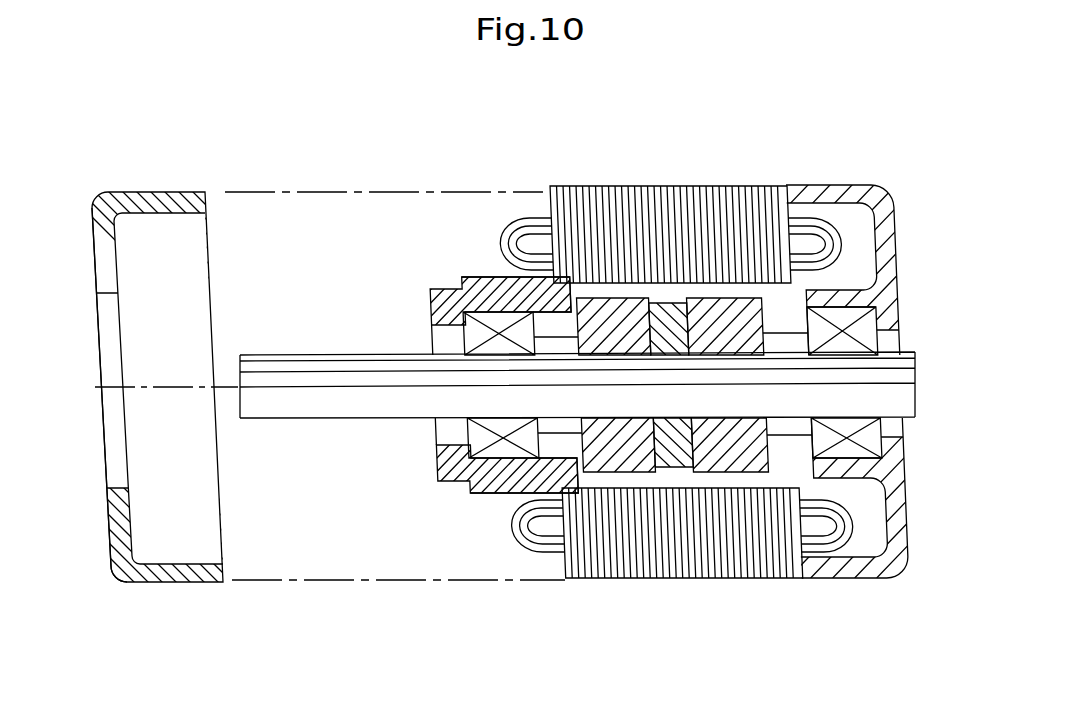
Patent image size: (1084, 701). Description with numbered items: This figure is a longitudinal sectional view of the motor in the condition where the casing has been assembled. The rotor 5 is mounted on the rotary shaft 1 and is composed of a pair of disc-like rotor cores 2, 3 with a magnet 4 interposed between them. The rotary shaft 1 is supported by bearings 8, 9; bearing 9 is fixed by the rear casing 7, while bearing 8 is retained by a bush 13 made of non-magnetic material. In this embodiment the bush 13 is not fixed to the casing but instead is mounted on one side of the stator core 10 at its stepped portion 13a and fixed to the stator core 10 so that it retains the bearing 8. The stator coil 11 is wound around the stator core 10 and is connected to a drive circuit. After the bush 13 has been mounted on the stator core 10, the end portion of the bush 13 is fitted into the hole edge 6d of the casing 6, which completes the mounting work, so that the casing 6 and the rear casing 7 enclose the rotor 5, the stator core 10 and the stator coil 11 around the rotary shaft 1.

The rotary shaft 1 is at (317, 368).
The rotor core 2 is at (617, 465).
The rotor core 3 is at (727, 457).
The magnet 4 is at (677, 453).
The rotor 5 is at (666, 384).
The casing 6 is at (156, 191).
The hole edge 6d is at (108, 478).
The rear casing 7 is at (877, 198).
The bearing 8 is at (483, 493).
The bearing 9 is at (867, 327).
The stator core 10 is at (663, 205).
The stator coil 11 is at (833, 542).
The bush 13 is at (480, 279).
The stepped portion 13a is at (559, 283).